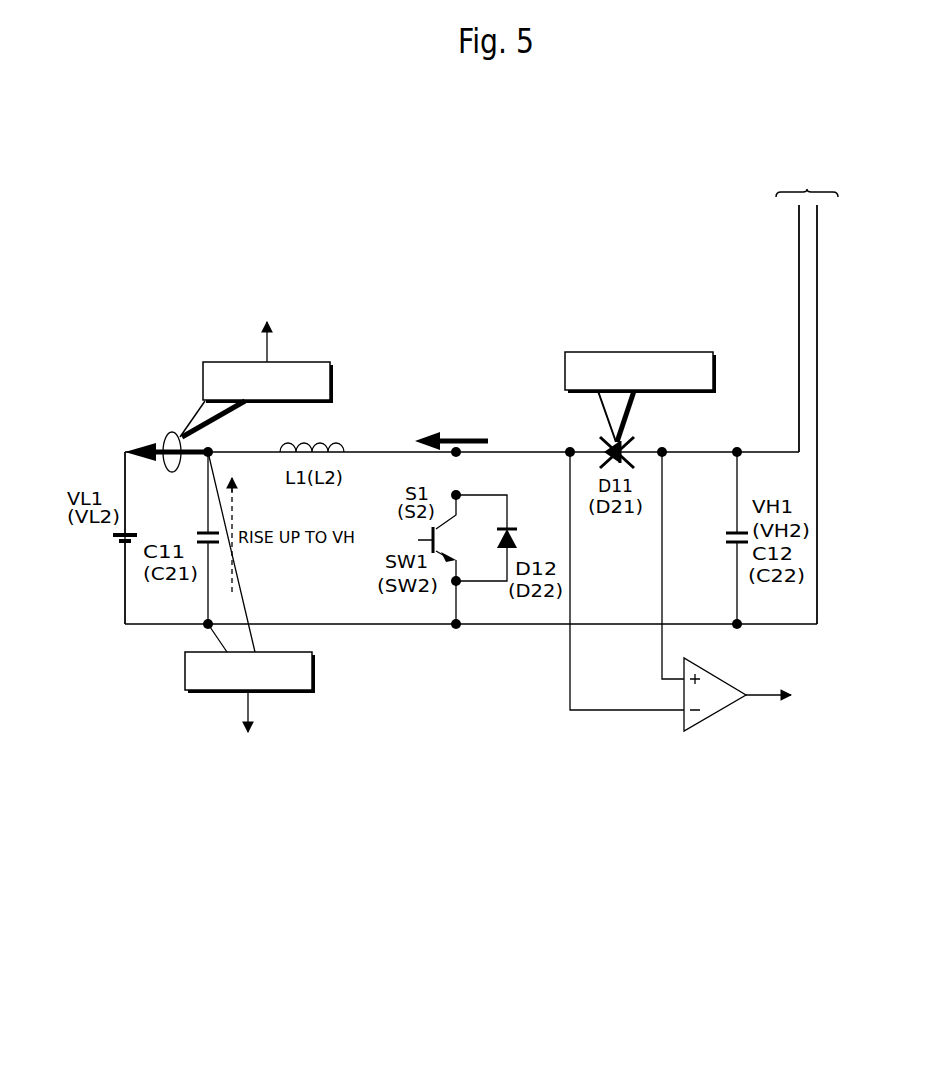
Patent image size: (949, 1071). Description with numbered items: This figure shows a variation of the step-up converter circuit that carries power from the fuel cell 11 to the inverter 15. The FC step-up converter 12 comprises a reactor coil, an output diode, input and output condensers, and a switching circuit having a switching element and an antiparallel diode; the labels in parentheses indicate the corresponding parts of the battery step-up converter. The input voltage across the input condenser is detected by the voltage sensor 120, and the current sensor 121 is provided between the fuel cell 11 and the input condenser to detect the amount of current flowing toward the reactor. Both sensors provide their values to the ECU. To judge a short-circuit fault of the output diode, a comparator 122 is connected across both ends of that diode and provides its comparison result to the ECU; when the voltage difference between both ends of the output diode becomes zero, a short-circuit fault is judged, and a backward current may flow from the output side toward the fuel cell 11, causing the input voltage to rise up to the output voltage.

The fuel cell 11 is at (102, 551).
The FC step-up converter 12 is at (470, 664).
The inverter 15 is at (805, 395).
The voltage sensor 120 is at (185, 670).
The current sensor 121 is at (333, 382).
The comparator 122 is at (722, 678).